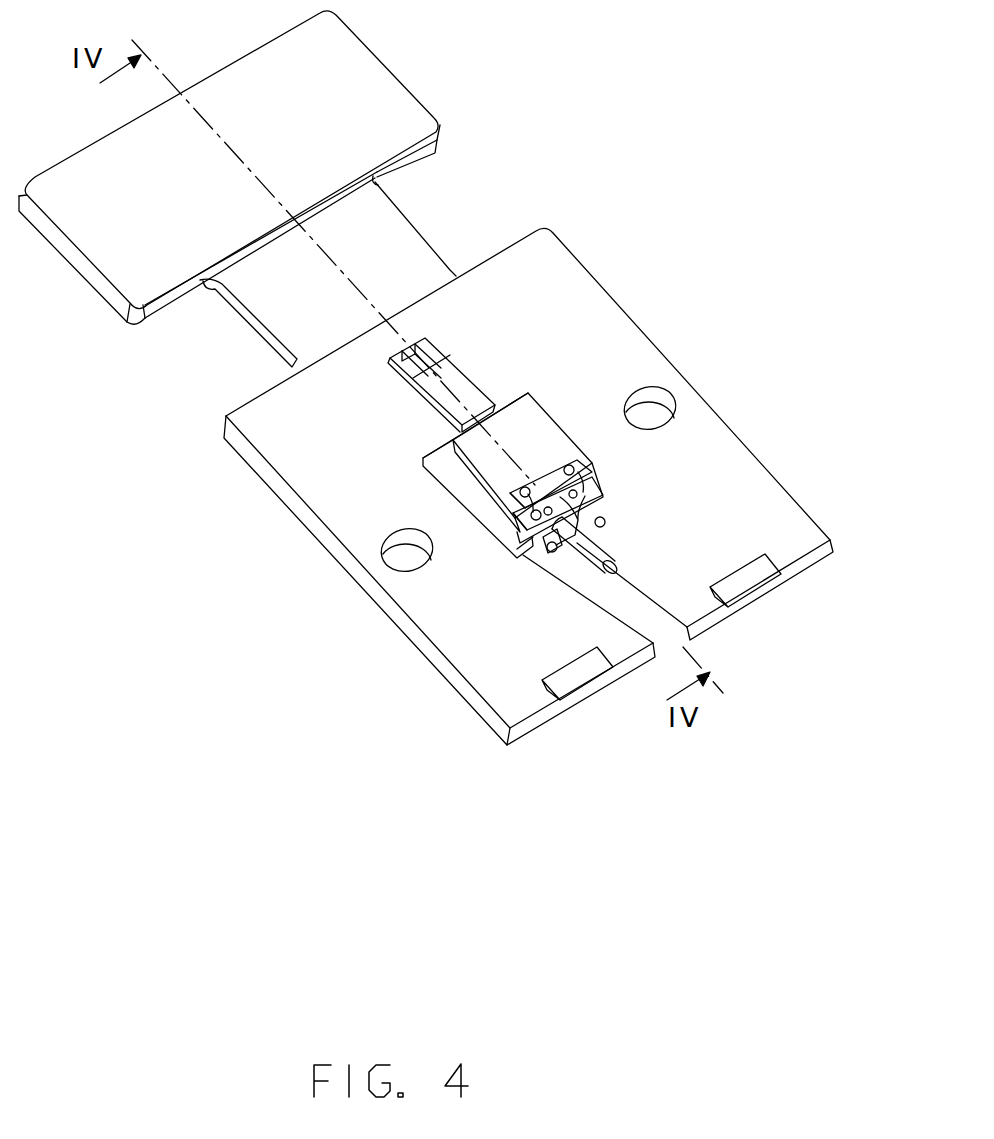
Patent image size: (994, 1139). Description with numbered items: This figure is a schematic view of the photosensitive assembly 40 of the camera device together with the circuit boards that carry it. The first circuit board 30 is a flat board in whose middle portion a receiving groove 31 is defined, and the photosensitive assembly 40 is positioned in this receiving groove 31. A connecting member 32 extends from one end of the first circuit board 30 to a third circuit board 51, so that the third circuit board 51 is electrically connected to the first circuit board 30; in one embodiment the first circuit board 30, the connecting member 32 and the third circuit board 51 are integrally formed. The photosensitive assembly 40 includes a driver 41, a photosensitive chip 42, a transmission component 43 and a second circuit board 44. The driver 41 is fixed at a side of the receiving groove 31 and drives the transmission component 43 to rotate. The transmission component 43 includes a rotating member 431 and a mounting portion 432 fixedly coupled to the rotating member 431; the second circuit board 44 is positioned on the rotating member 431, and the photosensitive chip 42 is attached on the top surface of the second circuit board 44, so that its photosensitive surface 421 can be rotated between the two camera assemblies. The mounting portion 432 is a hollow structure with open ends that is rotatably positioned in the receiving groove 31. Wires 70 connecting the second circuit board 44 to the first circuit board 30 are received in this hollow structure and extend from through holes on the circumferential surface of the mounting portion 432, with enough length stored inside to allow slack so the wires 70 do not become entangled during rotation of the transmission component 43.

The first circuit board 30 is at (572, 287).
The receiving groove 31 is at (616, 487).
The connecting member 32 is at (397, 247).
The photosensitive assembly 40 is at (156, 538).
The driver 41 is at (440, 380).
The photosensitive chip 42 is at (477, 456).
The photosensitive surface 421 is at (533, 430).
The transmission component 43 is at (397, 712).
The rotating member 431 is at (547, 530).
The mounting portion 432 is at (590, 545).
The second circuit board 44 is at (467, 483).
The third circuit board 51 is at (373, 83).
The wires 70 is at (612, 520).